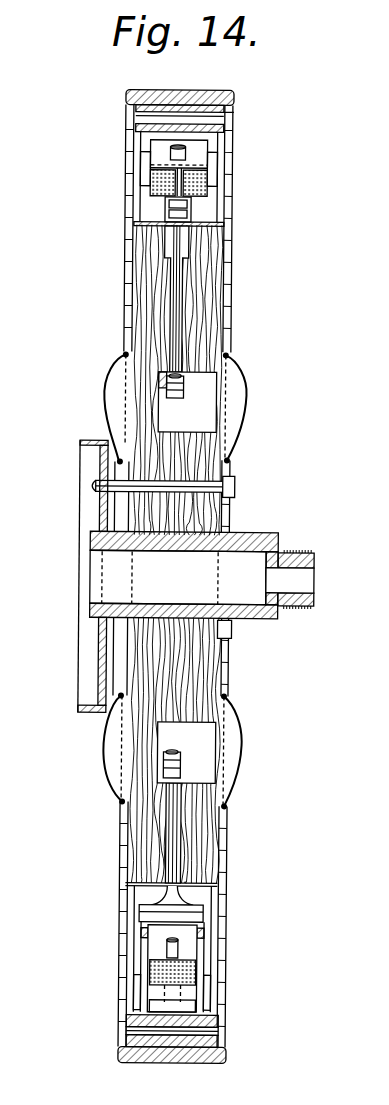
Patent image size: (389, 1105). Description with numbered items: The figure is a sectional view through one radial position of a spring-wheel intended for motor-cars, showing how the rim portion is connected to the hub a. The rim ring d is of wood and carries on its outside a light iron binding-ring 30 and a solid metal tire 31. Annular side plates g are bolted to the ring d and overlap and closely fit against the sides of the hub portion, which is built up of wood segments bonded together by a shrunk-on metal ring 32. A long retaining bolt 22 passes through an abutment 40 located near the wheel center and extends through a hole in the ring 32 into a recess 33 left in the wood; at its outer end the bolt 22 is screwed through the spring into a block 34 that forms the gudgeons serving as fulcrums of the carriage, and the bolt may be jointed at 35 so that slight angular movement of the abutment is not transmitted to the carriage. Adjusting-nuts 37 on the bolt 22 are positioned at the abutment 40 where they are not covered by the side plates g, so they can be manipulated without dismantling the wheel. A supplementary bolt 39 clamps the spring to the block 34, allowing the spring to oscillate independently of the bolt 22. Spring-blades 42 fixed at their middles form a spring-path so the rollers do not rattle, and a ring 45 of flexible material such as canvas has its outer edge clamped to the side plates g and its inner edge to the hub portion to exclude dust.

The solid metal tire 31 is at (220, 97).
The outer light iron binding-ring 30 is at (136, 114).
The ring d is at (234, 113).
The block 34 is at (208, 172).
The joint 35 is at (203, 210).
The annular side plate g is at (228, 216).
The shrunk-on metal ring 32 is at (220, 240).
The retaining-screw (bolt) 22 is at (183, 327).
The ring of flexible material 45 is at (104, 385).
The abutment 40 is at (141, 380).
The adjusting-nut 37 is at (187, 386).
The recess 33 is at (190, 772).
The hub a is at (245, 540).
The supplementary bolt 39 is at (186, 946).
The spring-blade 42 is at (134, 1024).